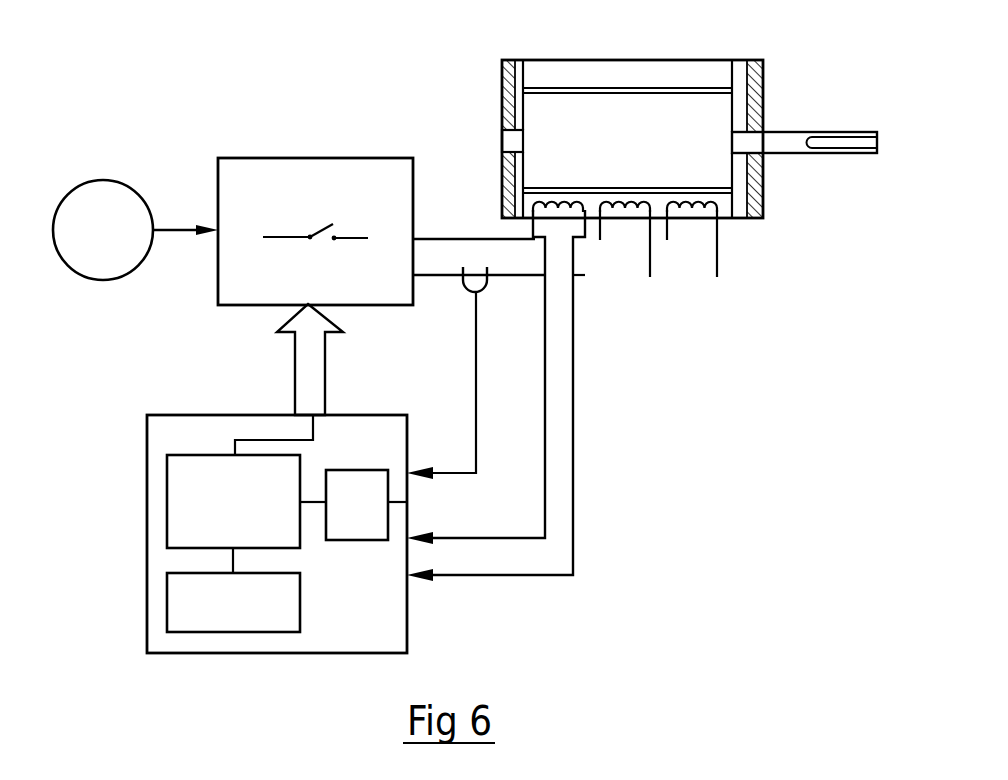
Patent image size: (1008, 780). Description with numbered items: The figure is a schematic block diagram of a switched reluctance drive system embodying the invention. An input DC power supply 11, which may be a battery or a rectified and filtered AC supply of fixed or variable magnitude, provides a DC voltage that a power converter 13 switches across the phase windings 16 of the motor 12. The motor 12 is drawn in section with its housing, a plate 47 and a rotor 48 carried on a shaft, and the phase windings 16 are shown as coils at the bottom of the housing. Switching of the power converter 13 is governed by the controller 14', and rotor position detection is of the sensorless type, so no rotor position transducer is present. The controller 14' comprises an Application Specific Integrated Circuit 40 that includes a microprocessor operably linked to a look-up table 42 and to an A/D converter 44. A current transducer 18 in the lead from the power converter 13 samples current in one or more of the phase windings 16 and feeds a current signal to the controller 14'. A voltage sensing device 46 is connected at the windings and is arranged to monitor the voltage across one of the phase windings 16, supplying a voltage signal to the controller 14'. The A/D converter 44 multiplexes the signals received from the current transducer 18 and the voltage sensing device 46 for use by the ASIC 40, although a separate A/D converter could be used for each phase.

The DC power supply 11 is at (103, 180).
The motor 12 is at (595, 62).
The power converter 13 is at (262, 157).
The controller 14' is at (263, 534).
The phase windings 16 is at (698, 200).
The current transducer 18 is at (488, 283).
The Application Specific Integrated Circuit (ASIC) 40 is at (218, 453).
The look-up table 42 is at (167, 592).
The A/D converter 44 is at (353, 540).
The voltage sensing device 46 is at (565, 238).
The stator plate 47 is at (675, 73).
The rotor / shaft 48 is at (690, 107).